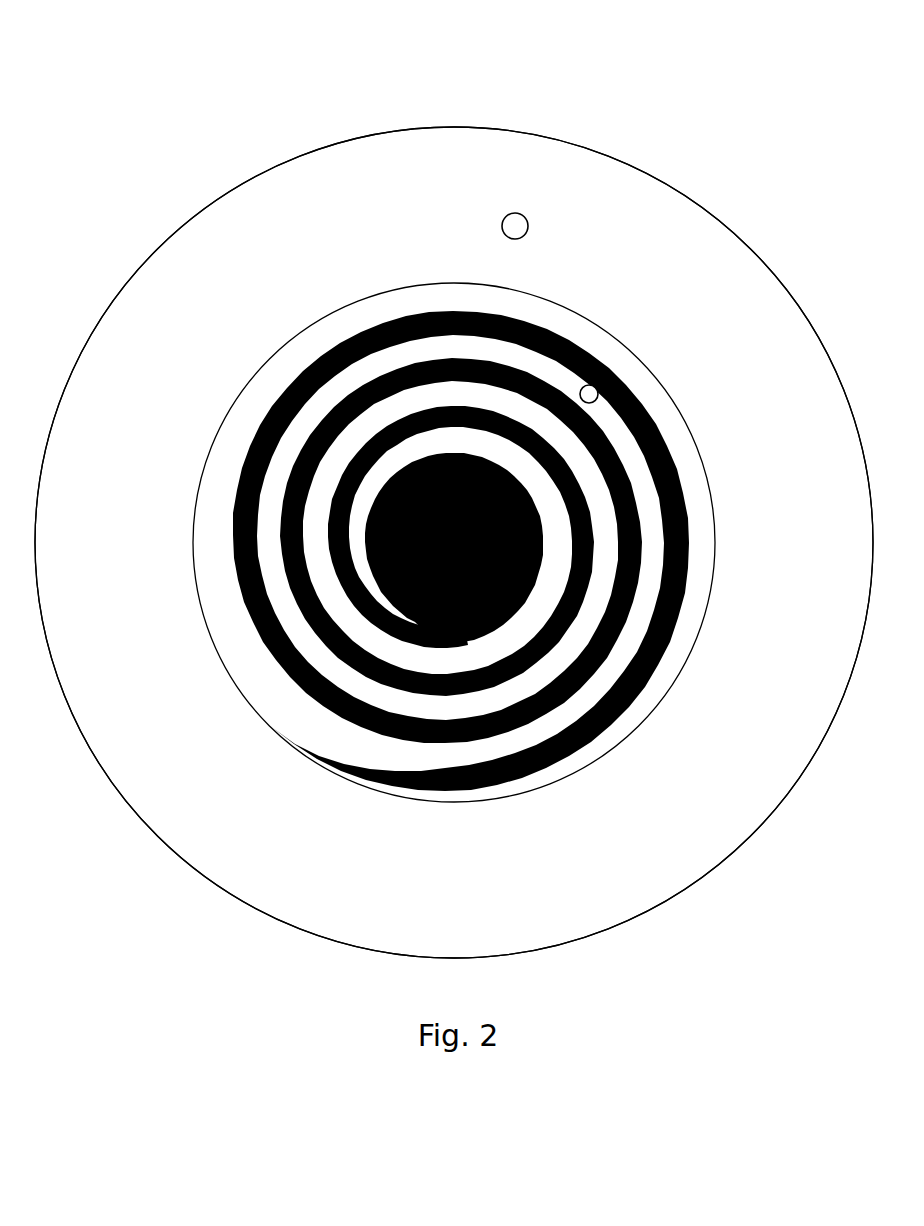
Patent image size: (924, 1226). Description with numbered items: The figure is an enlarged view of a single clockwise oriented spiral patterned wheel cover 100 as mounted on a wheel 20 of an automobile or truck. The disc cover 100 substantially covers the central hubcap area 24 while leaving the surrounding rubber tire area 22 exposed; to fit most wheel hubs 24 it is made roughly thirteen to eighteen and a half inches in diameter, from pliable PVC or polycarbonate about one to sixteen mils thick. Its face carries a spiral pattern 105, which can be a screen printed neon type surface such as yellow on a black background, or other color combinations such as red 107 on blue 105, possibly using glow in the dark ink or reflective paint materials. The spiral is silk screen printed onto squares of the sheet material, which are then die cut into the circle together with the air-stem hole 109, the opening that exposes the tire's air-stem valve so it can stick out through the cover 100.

The wheel 20 is at (334, 69).
The rubber tire area 22 is at (752, 362).
The central hubcap area 24 is at (240, 694).
The wheel cover 100 is at (652, 522).
The spiral pattern 105 is at (333, 343).
The red color 107 is at (268, 568).
The air-stem hole 109 is at (597, 385).